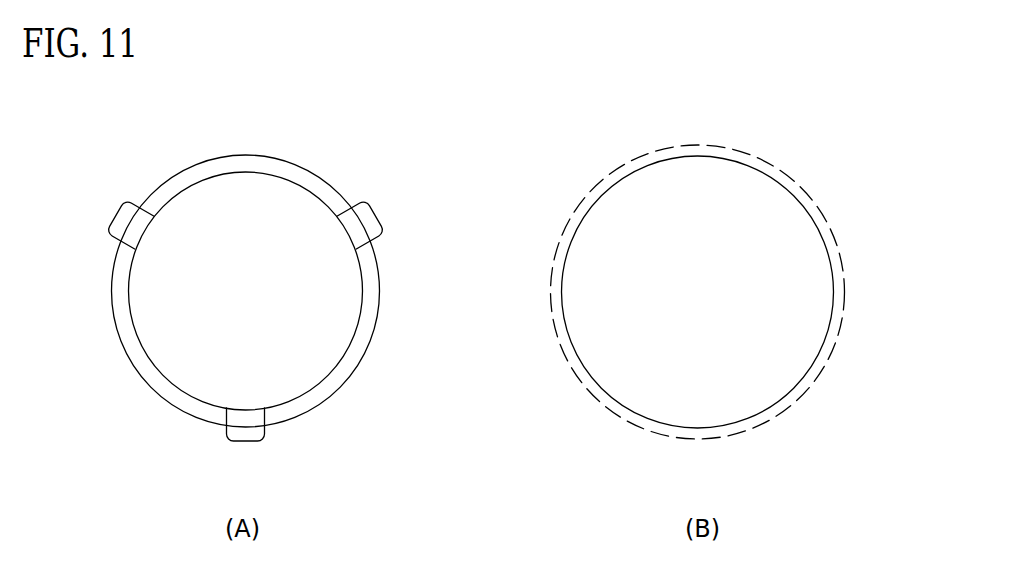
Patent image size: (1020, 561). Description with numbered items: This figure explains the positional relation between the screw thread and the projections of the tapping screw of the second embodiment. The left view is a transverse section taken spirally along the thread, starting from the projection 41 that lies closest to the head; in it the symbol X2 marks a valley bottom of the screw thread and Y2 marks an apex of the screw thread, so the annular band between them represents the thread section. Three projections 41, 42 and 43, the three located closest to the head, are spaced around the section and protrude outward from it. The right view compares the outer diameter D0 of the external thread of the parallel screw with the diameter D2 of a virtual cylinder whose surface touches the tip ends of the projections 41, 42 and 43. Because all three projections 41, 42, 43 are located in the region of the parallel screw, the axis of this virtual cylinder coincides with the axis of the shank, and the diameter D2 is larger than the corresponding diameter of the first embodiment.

The valley bottom of the screw thread X2 is at (234, 172).
The apex of the screw thread Y2 is at (145, 352).
The projection 41 is at (256, 418).
The projection 42 is at (362, 232).
The projection 43 is at (140, 223).
The outer diameter of the external thread D0 is at (693, 155).
The diameter of the virtual cylinder D2 is at (840, 255).